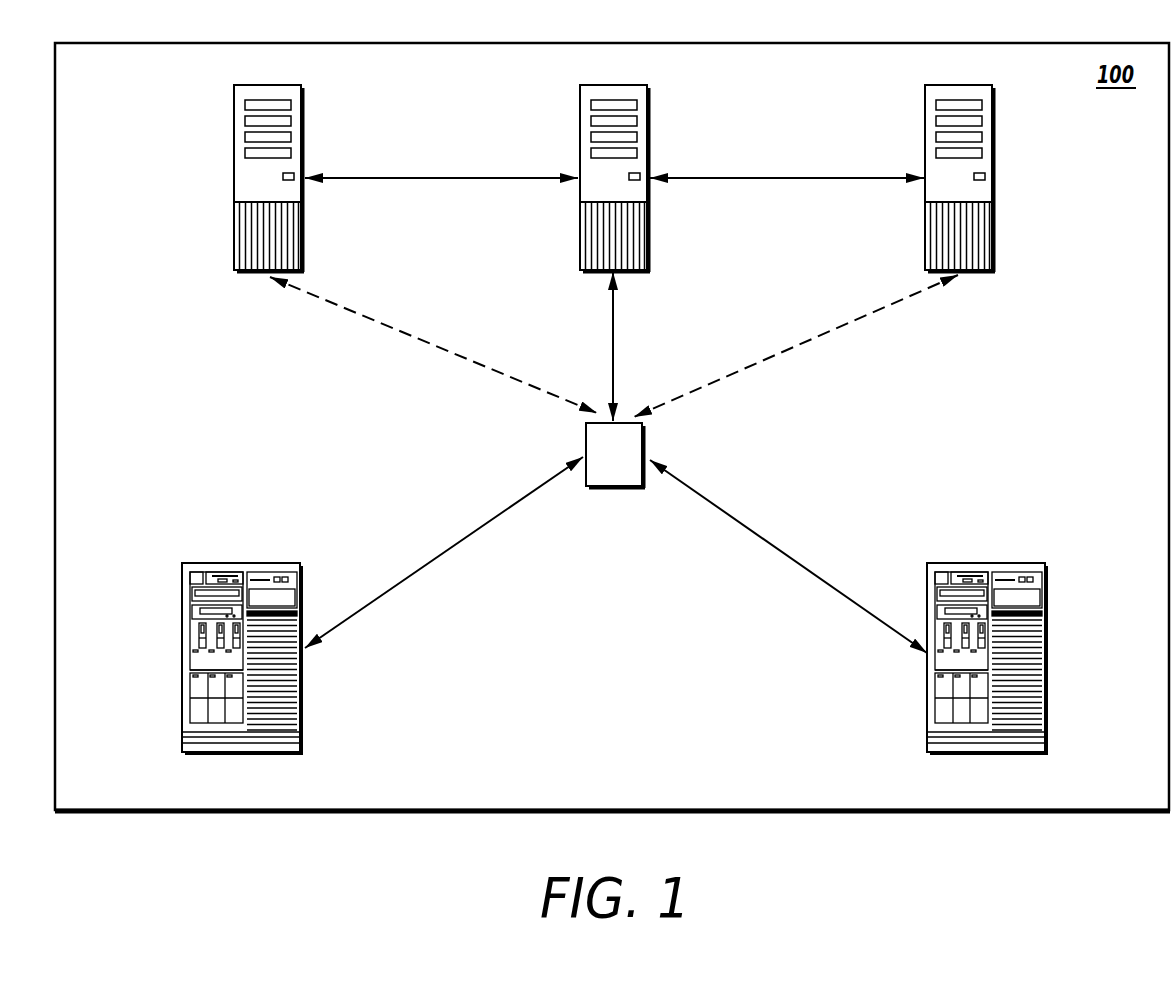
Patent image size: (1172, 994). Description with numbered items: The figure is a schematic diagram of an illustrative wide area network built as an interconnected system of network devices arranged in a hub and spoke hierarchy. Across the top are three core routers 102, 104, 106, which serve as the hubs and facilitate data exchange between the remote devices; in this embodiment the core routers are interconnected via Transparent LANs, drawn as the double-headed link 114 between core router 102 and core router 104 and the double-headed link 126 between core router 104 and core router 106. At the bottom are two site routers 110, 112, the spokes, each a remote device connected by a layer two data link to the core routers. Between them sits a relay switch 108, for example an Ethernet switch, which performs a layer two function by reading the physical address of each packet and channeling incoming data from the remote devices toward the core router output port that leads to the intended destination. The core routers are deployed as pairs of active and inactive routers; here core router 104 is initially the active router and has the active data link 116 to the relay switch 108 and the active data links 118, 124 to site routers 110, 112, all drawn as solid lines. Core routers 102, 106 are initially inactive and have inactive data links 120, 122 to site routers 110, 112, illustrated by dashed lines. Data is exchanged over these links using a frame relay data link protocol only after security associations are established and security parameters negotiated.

The core router 102 is at (307, 70).
The core router 104 is at (653, 70).
The core router 106 is at (998, 70).
The relay switch 108 is at (616, 489).
The site router 110 is at (304, 548).
The site router 112 is at (1049, 548).
The link 114 is at (444, 176).
The active data link 116 is at (616, 344).
The active data link 118 is at (448, 550).
The inactive data link 120 is at (439, 346).
The inactive data link 122 is at (787, 346).
The active data link 124 is at (789, 555).
The link 126 is at (789, 176).